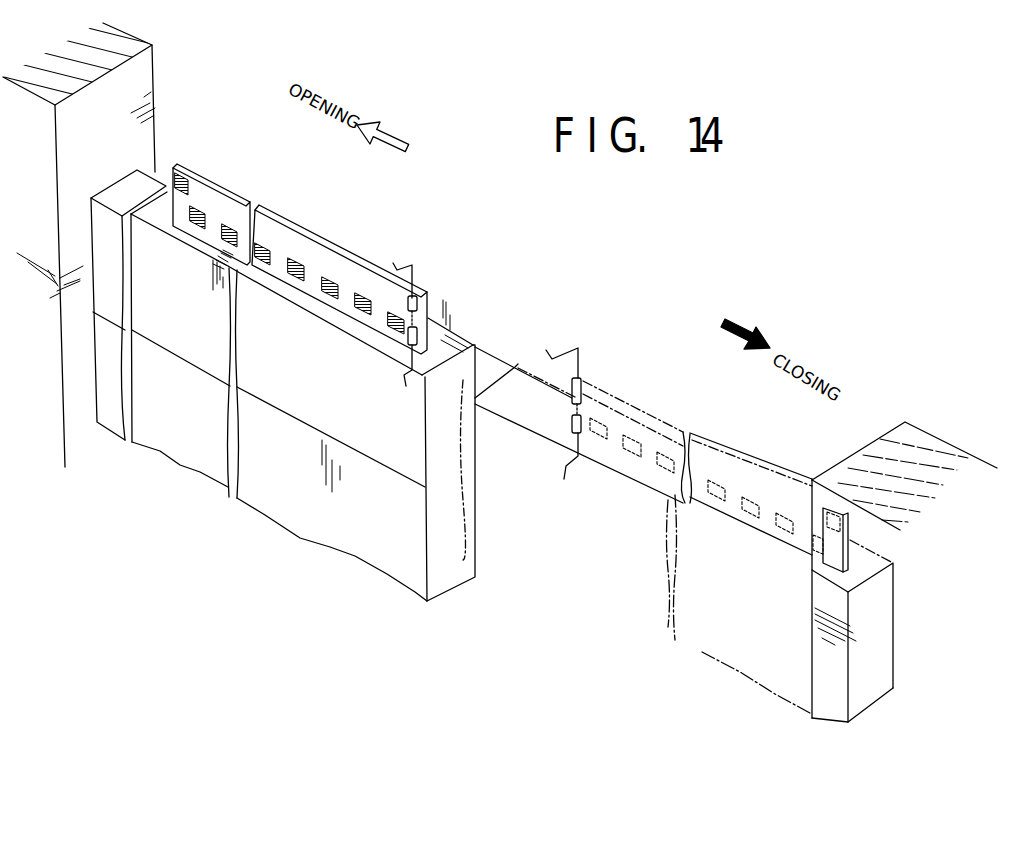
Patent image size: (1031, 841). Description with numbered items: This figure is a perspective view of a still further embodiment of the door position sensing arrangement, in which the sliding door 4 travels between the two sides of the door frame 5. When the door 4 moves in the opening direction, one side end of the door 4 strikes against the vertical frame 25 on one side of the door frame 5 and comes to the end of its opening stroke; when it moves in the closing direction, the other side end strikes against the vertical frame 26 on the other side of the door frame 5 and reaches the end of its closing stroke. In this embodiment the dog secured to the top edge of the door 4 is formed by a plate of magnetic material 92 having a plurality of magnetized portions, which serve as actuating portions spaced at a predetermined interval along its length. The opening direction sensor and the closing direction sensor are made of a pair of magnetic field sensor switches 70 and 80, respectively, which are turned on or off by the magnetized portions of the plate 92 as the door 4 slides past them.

The vertical frame 25 is at (152, 113).
The door 4 is at (262, 479).
The plate of magnetic material 92 is at (290, 237).
The magnetic field sensor switch 70 is at (421, 272).
The magnetic field sensor switch 80 is at (593, 360).
The door frame 5 is at (880, 440).
The vertical frame 26 is at (831, 476).